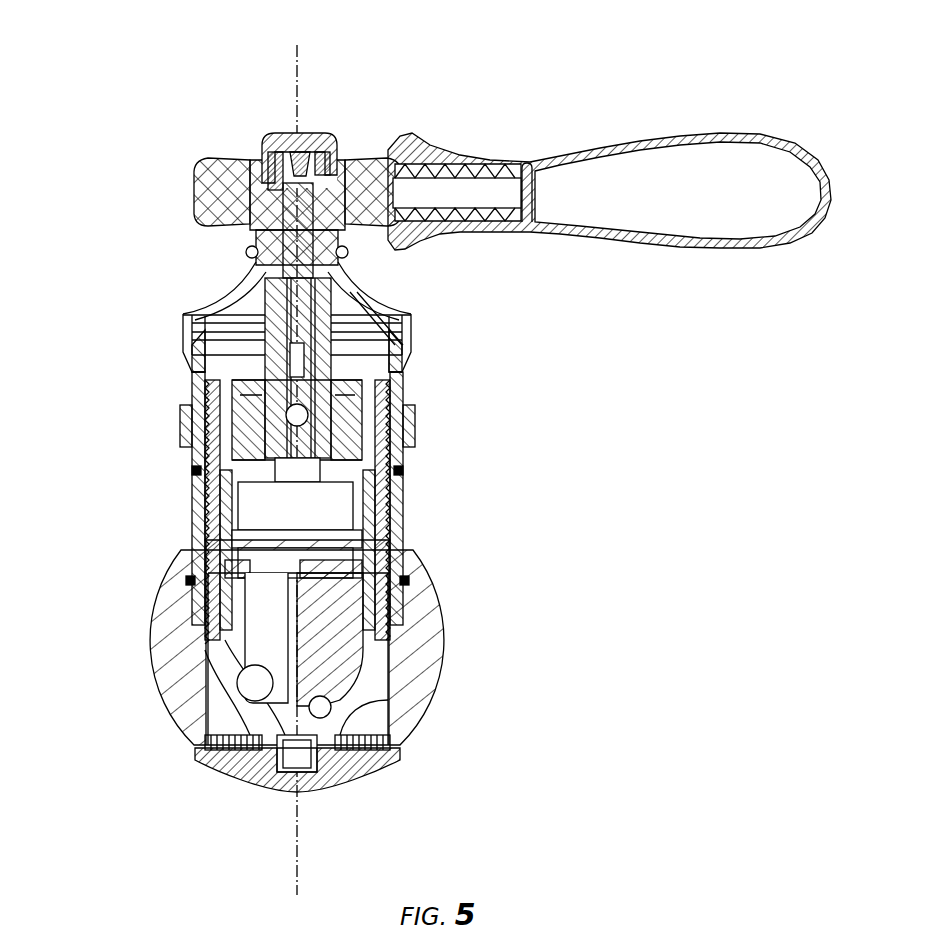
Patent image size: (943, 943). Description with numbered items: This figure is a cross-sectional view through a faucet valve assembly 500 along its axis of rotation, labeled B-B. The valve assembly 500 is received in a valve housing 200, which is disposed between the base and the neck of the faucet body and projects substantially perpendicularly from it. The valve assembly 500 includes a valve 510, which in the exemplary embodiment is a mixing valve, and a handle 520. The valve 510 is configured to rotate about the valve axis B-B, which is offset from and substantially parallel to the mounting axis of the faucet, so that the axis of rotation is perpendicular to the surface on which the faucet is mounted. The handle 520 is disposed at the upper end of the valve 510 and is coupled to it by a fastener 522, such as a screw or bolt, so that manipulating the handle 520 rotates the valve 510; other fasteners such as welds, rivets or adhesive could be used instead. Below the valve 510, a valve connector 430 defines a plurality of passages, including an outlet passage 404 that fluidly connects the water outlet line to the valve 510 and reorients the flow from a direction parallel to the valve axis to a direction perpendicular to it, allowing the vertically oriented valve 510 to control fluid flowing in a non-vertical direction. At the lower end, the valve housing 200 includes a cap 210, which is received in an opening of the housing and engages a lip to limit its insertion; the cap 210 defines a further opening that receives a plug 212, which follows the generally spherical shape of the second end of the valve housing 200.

The valve assembly 500 is at (592, 478).
The handle 520 is at (528, 167).
The fastener 522 is at (298, 230).
The valve 510 is at (290, 518).
The outlet passage 404 is at (263, 646).
The valve connector 430 is at (330, 650).
The valve housing 200 is at (420, 647).
The cap 210 is at (212, 748).
The plug 212 is at (268, 772).